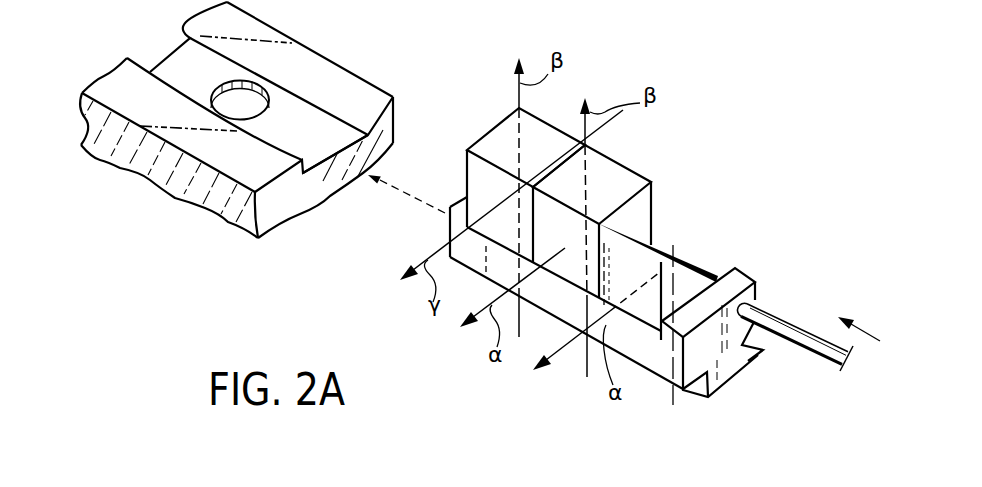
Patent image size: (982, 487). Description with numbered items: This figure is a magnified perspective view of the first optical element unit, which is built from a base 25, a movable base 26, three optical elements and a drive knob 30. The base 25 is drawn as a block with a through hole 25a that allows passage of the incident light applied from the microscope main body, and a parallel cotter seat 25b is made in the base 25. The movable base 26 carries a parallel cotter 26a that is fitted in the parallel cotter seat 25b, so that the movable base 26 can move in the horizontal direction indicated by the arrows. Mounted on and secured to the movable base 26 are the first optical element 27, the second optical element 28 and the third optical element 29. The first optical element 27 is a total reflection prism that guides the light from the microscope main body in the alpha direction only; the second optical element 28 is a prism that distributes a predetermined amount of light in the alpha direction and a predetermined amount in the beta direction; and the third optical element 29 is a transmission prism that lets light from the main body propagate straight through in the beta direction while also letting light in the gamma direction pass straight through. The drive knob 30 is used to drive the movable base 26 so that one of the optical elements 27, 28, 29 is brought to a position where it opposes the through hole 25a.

The base 25 is at (350, 97).
The through hole 25a is at (242, 102).
The parallel cotter seat 25b is at (318, 143).
The movable base 26 is at (565, 249).
The parallel cotter 26a is at (733, 365).
The first optical element 27 is at (688, 282).
The second optical element 28 is at (603, 172).
The third optical element 29 is at (537, 138).
The drive knob 30 is at (830, 366).